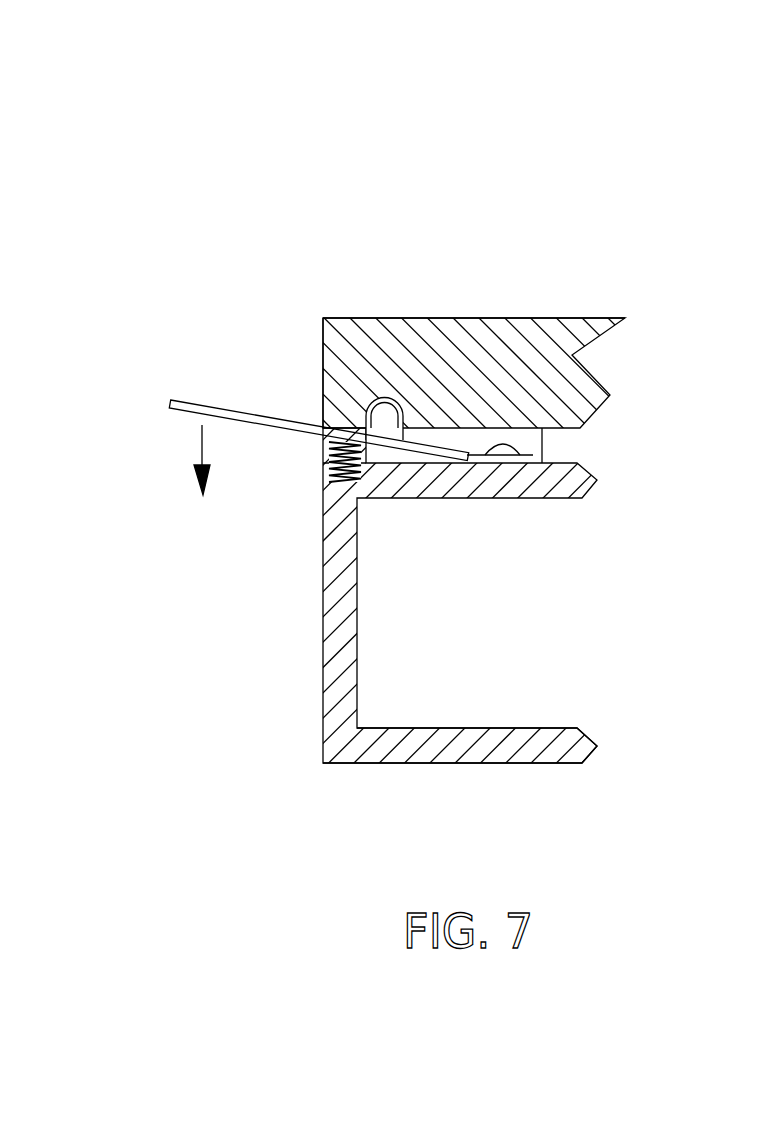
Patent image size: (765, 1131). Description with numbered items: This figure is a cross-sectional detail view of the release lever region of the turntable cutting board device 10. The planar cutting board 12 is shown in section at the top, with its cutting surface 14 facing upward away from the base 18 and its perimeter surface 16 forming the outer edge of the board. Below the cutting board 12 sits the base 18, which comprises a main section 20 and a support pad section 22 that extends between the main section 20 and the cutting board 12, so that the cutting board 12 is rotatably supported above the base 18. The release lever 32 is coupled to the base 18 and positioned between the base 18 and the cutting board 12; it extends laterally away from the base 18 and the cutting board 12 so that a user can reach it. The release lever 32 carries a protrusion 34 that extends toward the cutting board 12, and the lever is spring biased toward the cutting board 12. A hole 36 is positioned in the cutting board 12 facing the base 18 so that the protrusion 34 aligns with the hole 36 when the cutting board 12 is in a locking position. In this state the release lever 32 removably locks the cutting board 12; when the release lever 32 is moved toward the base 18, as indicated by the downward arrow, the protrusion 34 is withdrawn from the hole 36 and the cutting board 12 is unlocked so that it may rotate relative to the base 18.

The turntable cutting board device 10 is at (548, 95).
The cutting board 12 is at (518, 340).
The cutting surface 14 is at (365, 318).
The perimeter surface 16 is at (327, 372).
The base 18 is at (323, 610).
The main section 20 is at (418, 765).
The support pad section 22 is at (528, 442).
The release lever 32 is at (173, 408).
The protrusion 34 is at (385, 427).
The hole 36 is at (383, 398).